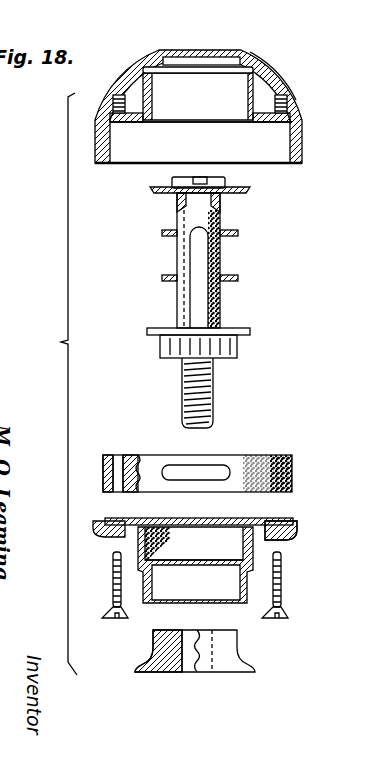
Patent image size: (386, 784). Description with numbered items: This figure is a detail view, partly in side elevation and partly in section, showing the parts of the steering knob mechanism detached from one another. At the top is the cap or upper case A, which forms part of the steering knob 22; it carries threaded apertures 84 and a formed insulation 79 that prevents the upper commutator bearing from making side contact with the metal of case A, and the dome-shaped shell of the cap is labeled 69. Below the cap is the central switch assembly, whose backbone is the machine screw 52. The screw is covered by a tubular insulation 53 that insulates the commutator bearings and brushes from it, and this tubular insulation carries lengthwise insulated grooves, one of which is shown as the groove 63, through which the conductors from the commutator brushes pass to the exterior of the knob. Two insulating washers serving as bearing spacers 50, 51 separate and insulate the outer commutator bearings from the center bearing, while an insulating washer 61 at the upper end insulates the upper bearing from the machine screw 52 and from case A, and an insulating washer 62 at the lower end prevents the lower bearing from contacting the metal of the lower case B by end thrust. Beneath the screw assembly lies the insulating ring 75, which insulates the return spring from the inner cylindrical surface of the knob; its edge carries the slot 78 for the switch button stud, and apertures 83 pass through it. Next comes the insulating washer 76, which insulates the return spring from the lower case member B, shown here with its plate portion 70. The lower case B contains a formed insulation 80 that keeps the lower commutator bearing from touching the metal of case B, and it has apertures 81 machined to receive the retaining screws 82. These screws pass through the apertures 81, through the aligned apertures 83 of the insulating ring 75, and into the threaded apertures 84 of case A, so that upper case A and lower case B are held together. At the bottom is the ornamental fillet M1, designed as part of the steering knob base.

The steering knob 22 is at (211, 50).
The cap dome shell 69 is at (281, 88).
The threaded apertures 84 is at (130, 101).
The formed insulation 79 is at (130, 122).
The upper case A is at (219, 192).
The insulating washer 61 is at (252, 190).
The insulating washer 50 is at (238, 234).
The insulating washer 51 is at (238, 278).
The insulated groove 63 is at (192, 243).
The tubular insulation 53 is at (177, 297).
The insulating washer 62 is at (250, 331).
The machine screw 52 is at (214, 393).
The apertures 83 is at (117, 458).
The insulating ring 75 is at (194, 449).
The slot 78 is at (221, 468).
The mounting plate 70 is at (262, 520).
The insulating washer 76 is at (293, 521).
The apertures 81 is at (118, 539).
The lower case B is at (221, 555).
The formed insulation 80 is at (168, 556).
The retaining screws 82 is at (112, 590).
The ornamental fillet M1 is at (234, 666).